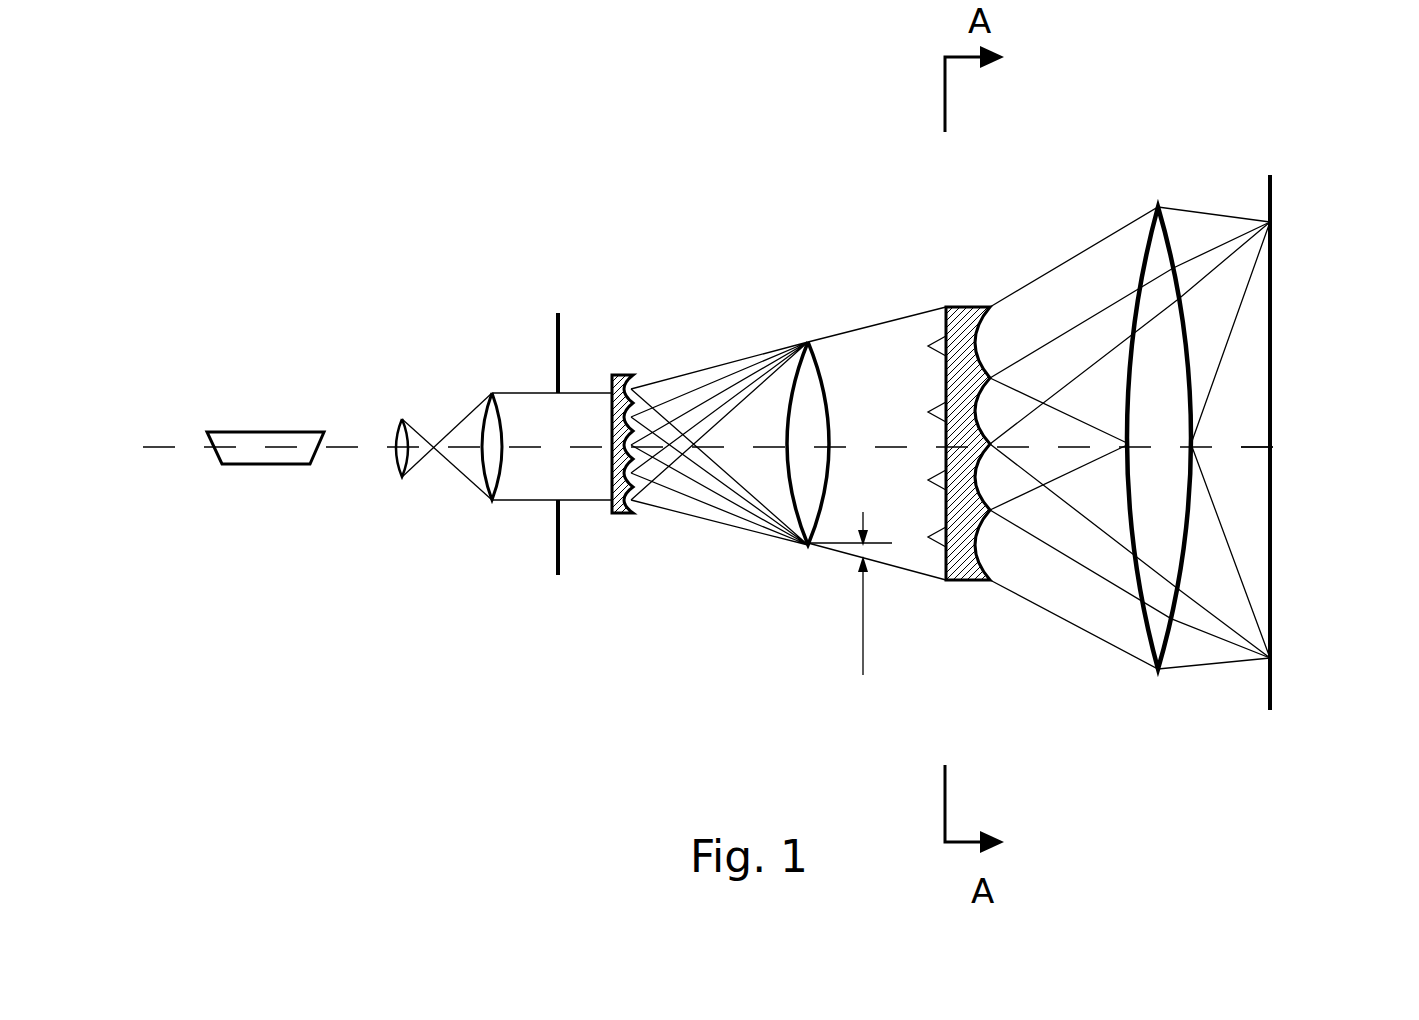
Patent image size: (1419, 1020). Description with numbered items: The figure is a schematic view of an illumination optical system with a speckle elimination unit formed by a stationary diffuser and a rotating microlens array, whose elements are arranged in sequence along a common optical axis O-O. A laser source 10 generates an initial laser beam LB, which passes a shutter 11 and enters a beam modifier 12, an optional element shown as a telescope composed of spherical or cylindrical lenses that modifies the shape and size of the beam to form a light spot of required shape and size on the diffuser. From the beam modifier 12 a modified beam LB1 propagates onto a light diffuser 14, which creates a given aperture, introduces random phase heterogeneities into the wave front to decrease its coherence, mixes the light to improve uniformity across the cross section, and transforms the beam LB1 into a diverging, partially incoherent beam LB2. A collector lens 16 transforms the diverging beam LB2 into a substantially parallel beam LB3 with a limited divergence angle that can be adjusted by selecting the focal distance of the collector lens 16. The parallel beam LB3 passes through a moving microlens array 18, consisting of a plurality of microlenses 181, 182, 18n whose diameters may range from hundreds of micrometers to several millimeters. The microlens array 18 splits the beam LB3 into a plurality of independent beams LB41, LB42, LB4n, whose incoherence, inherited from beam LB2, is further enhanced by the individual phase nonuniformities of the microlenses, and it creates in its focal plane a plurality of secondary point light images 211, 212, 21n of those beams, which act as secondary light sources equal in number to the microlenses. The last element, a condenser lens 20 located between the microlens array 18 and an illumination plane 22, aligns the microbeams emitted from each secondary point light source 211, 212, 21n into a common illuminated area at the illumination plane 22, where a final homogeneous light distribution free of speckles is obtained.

The laser source 10 is at (266, 470).
The laser beam LB is at (363, 450).
The beam modifier 12 is at (433, 497).
The shutter 11 is at (558, 571).
The modified beam LB1 is at (530, 393).
The light diffuser 14 is at (627, 519).
The diverging beam LB2 is at (705, 369).
The collector lens 16 is at (812, 548).
The substantially parallel light beam LB3 is at (893, 318).
The moving microlens array 18 is at (963, 620).
The secondary point light image 211 is at (928, 346).
The secondary point light image 212 is at (946, 307).
The secondary point light image 21n is at (928, 538).
The independent beam LB41 is at (1055, 268).
The independent beam LB42 is at (990, 410).
The independent beam LB4n is at (1035, 602).
The microlens 181 is at (990, 341).
The microlens 182 is at (1178, 270).
The microlens 18n is at (990, 545).
The condenser lens 20 is at (1186, 626).
The illumination plane 22 is at (1278, 660).
The optical axis O-O is at (1242, 445).